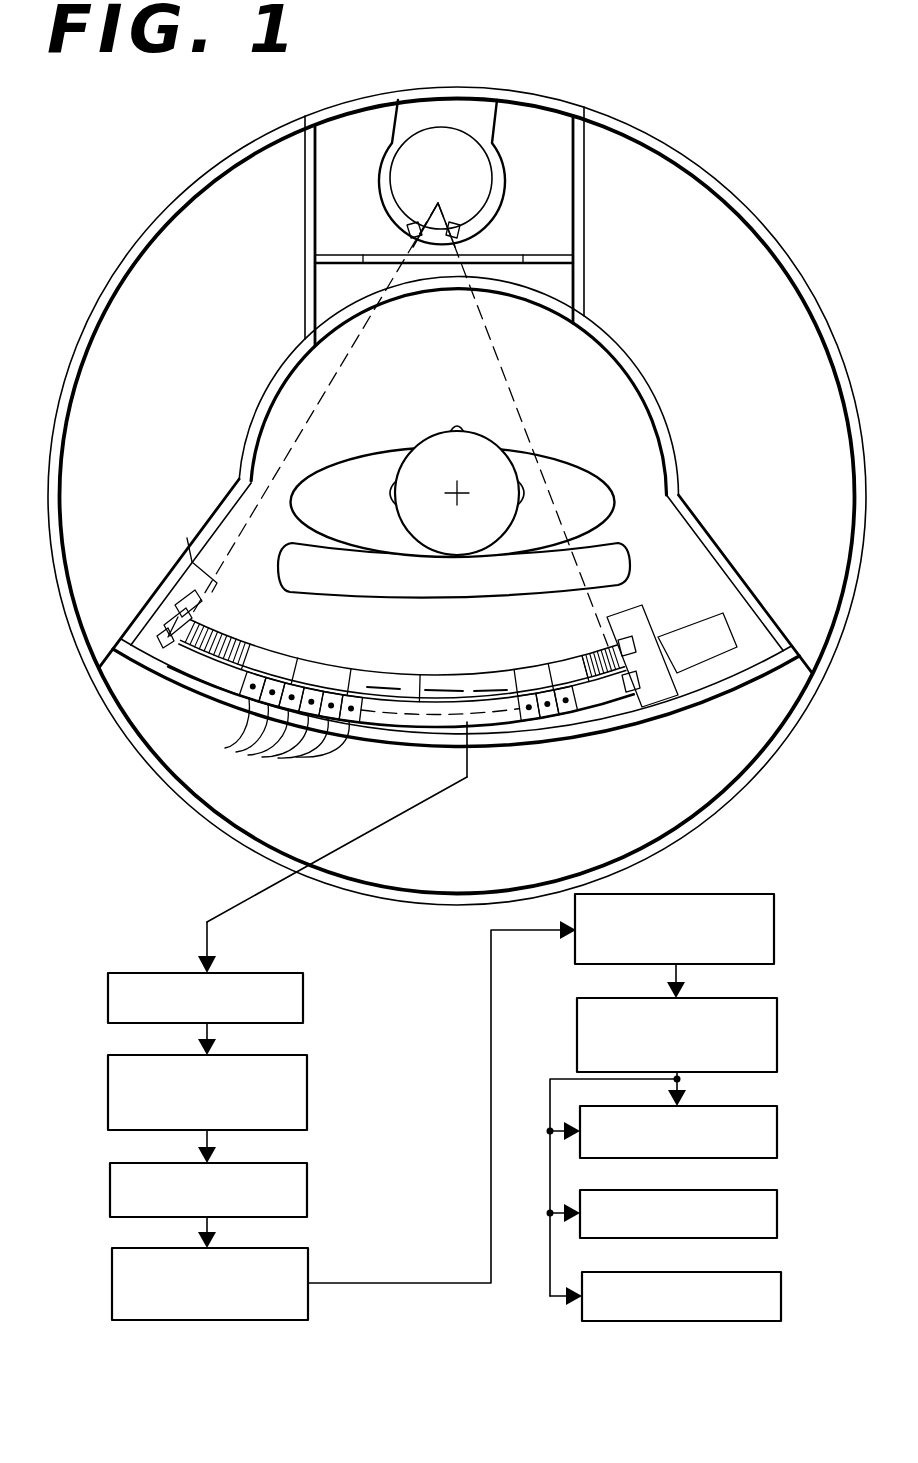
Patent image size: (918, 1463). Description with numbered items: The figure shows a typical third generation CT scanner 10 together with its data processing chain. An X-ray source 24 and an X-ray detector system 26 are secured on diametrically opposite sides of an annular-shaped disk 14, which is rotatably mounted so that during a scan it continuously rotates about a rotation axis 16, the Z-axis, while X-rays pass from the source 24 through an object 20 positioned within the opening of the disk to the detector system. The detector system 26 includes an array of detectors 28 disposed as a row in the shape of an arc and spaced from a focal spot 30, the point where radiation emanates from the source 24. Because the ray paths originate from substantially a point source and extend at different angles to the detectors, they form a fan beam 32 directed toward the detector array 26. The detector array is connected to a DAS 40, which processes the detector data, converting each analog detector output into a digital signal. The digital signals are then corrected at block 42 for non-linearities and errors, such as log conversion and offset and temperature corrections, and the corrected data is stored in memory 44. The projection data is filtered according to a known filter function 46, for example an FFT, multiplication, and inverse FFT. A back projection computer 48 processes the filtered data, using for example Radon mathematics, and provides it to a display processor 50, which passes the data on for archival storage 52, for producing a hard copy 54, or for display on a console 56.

The scanner 10 is at (722, 818).
The annular-shaped disk 14 is at (781, 241).
The rotation axis 16 is at (459, 490).
The object 20 is at (583, 470).
The X-ray source 24 is at (500, 205).
The X-ray detector system 26 is at (410, 703).
The detectors 28 is at (264, 731).
The focal spot 30 is at (438, 203).
The fan beam 32 is at (512, 383).
The DAS 40 is at (254, 1012).
The block 42 is at (307, 1074).
The memory 44 is at (337, 1172).
The filter function 46 is at (290, 1248).
The back projection computer 48 is at (774, 902).
The display processor 50 is at (777, 1006).
The archival storage 52 is at (777, 1113).
The hard copy 54 is at (777, 1216).
The console 56 is at (781, 1297).